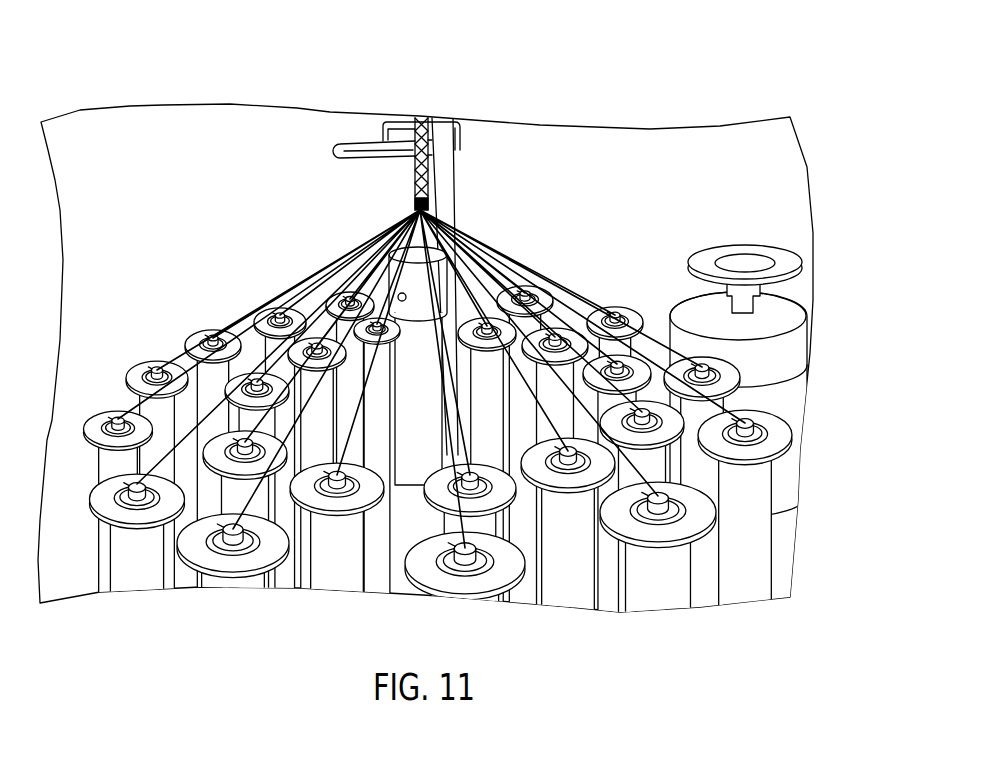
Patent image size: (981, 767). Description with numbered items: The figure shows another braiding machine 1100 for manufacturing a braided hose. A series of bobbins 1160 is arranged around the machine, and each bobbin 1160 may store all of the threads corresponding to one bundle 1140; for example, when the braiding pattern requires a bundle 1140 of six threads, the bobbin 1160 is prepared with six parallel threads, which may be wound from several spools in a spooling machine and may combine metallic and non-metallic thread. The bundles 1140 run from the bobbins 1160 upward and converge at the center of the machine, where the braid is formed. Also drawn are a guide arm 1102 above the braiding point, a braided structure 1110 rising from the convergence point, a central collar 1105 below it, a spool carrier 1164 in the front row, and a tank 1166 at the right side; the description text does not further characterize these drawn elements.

The braiding machine 1100 is at (625, 88).
The guide arm 1102 is at (413, 167).
The braiding point collar 1105 is at (430, 240).
The braided structure 1110 is at (432, 194).
The bundle 1140 is at (178, 350).
The bobbin 1160 is at (95, 418).
The spool carrier 1164 is at (407, 535).
The tank 1166 is at (673, 302).